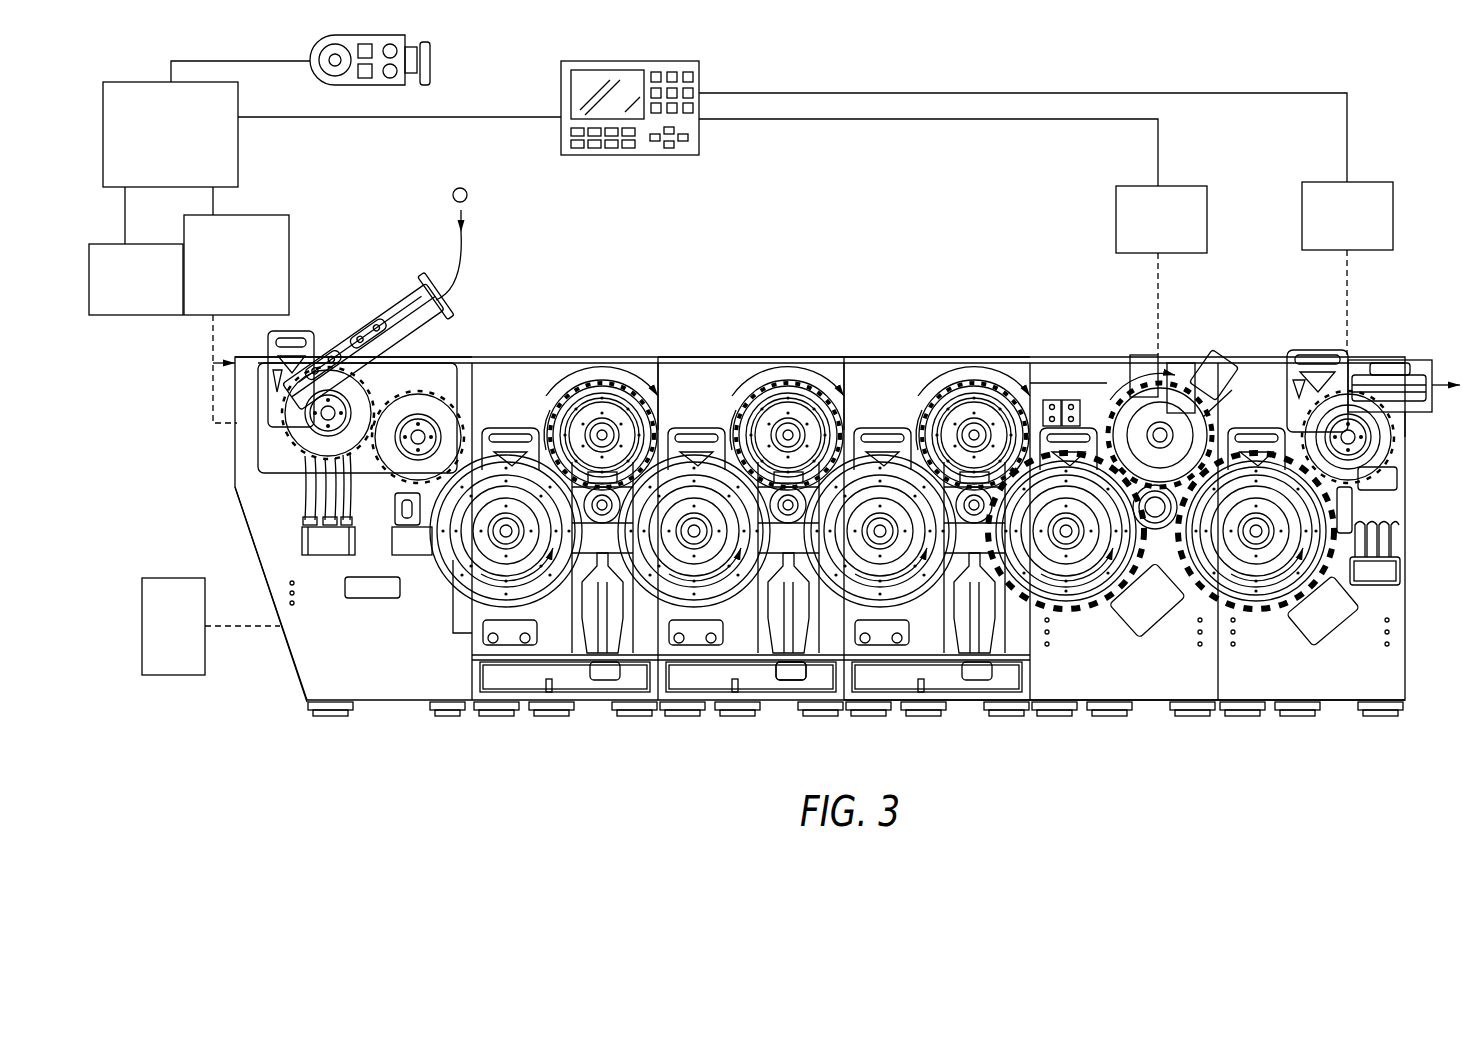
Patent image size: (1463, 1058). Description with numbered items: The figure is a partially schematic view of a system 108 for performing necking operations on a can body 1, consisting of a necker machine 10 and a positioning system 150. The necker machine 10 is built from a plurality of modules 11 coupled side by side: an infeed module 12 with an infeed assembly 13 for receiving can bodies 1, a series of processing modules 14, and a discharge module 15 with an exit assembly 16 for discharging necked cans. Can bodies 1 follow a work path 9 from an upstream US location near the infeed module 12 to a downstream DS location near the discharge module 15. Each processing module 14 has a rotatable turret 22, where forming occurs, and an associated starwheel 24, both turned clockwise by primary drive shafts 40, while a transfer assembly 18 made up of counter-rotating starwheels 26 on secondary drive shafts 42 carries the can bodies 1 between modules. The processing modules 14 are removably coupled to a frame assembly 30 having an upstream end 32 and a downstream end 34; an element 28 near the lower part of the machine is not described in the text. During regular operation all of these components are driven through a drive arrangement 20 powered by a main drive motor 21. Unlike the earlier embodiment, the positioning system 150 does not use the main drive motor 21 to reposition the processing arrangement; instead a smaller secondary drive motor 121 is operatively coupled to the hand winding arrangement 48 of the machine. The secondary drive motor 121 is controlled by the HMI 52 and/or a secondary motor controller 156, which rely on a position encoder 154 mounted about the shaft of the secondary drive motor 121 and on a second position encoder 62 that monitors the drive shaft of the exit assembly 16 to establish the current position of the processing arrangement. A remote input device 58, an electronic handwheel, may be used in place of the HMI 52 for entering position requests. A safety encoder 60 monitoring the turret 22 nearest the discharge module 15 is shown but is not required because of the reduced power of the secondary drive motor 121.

The can body 1 is at (467, 192).
The work path 9 is at (1440, 406).
The necker machine 10 is at (783, 283).
The modules 11 is at (958, 285).
The infeed module 12 is at (298, 325).
The infeed assembly 13 is at (382, 282).
The processing modules 14 is at (519, 342).
The discharge module 15 is at (1272, 340).
The exit assembly 16 is at (1400, 342).
The transfer assembly 18 is at (425, 635).
The drive arrangement 20 is at (280, 638).
The main drive motor 21 is at (160, 676).
The turret 22 is at (622, 358).
The starwheel 24 is at (578, 358).
The starwheels 26 is at (548, 612).
The ink tray 28 is at (736, 612).
The frame assembly 30 is at (1092, 706).
The upstream end 32 is at (300, 720).
The downstream end 34 is at (1370, 342).
The primary drive shafts 40 is at (598, 432).
The secondary drive shafts 42 is at (503, 540).
The hand winding arrangement 48 is at (215, 458).
The HMI 52 is at (561, 72).
The remote input device 58 is at (432, 60).
The safety encoder 60 is at (1116, 208).
The second position encoder 62 is at (1302, 200).
The system 108 is at (305, 800).
The secondary drive motor 121 is at (265, 215).
The positioning system 150 is at (748, 73).
The position encoder 154 is at (117, 316).
The secondary motor controller 156 is at (168, 82).
The upstream US is at (228, 363).
The downstream DS is at (1428, 347).